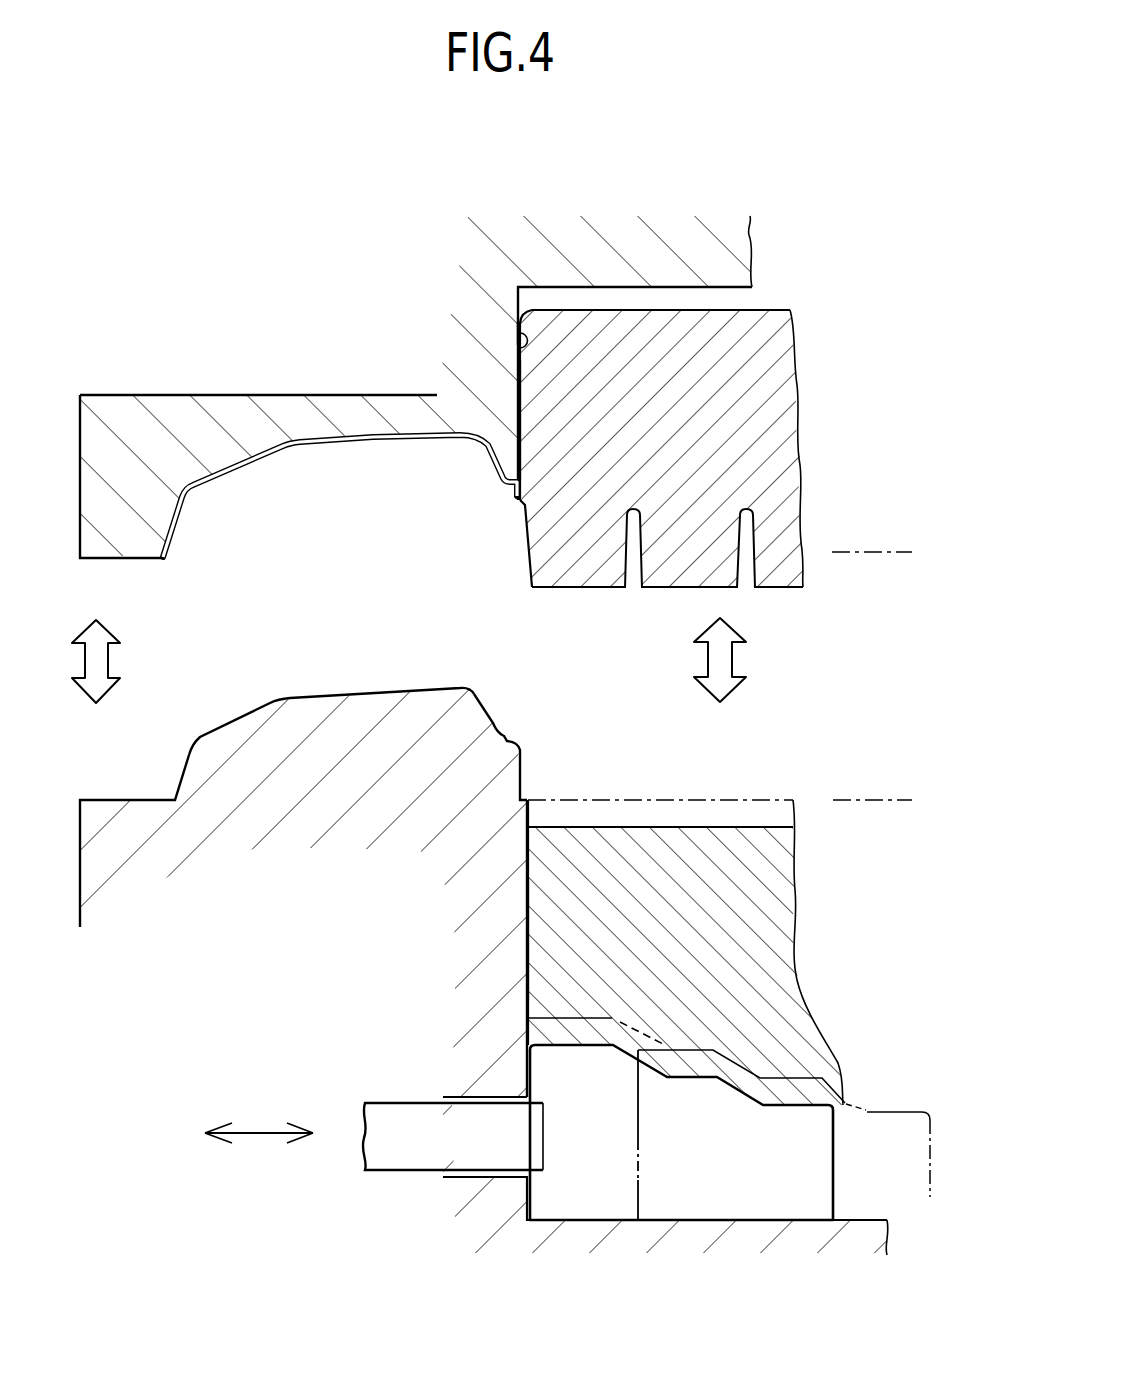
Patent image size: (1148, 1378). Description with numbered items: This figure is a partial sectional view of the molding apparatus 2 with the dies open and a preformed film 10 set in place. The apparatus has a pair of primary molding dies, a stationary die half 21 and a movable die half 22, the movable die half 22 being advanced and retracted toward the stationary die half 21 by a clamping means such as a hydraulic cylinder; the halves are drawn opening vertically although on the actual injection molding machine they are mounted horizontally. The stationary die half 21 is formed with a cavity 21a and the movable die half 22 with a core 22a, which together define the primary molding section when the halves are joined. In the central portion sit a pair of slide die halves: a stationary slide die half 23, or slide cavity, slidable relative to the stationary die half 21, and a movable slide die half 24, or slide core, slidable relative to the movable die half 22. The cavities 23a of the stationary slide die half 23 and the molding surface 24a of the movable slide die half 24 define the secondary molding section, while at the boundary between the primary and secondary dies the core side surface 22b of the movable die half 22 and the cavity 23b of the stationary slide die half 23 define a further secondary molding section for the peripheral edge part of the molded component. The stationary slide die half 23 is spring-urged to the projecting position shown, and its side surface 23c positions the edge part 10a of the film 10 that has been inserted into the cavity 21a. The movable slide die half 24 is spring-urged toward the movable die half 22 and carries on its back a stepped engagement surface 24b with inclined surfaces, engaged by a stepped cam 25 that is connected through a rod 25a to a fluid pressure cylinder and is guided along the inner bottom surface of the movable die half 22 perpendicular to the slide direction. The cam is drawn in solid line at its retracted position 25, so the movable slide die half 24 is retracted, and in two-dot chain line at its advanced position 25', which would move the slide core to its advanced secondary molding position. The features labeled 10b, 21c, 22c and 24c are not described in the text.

The molding apparatus 2 is at (215, 292).
The film 10 is at (340, 503).
The edge part 10a is at (512, 500).
The end portion of workpiece 10b is at (165, 558).
The stationary die half 21 is at (416, 392).
The cavity 21a is at (287, 463).
The side face of upper die 21c is at (518, 332).
The movable die half 22 is at (484, 942).
The core 22a is at (373, 695).
The core side surface 22b is at (522, 767).
The side face of lower die 22c is at (522, 947).
The stationary slide die half 23 is at (637, 484).
The cavities 23a is at (631, 578).
The cavity 23b is at (527, 557).
The side surface 23c is at (520, 390).
The movable slide die half 24 is at (650, 963).
The molding surface 24a is at (658, 827).
The stepped engagement surface 24b is at (833, 1107).
The side face of lower pad 24c is at (522, 897).
The stepped cam 25 is at (646, 1105).
The rod 25a is at (392, 1102).
The advanced position of stepped cam 25' is at (784, 1117).